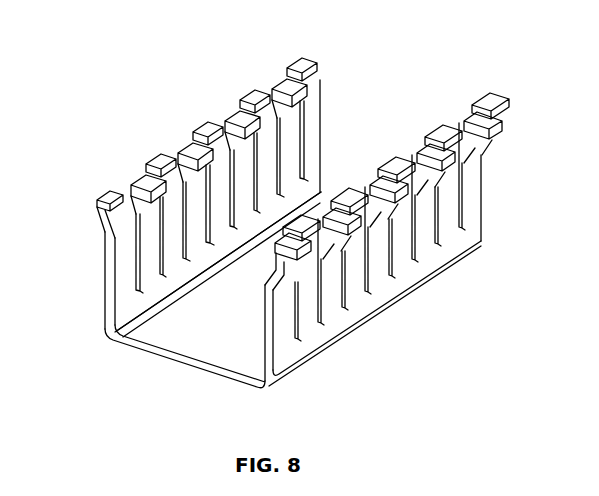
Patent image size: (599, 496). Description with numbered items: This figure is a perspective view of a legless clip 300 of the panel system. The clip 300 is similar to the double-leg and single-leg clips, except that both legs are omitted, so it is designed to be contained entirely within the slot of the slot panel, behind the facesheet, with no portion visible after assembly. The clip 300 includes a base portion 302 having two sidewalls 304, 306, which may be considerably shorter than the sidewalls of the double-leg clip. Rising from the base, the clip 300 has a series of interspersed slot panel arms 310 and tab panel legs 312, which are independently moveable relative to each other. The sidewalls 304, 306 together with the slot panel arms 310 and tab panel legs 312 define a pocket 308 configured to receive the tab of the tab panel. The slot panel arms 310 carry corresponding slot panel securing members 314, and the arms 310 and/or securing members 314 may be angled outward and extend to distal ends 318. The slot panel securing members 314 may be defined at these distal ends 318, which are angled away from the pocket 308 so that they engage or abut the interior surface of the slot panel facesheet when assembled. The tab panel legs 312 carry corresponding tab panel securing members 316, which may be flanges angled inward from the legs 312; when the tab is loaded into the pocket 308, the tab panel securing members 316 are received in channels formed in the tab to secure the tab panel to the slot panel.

The clip 300 is at (403, 44).
The base portion 302 is at (172, 375).
The sidewall 304 is at (125, 340).
The sidewall 306 is at (292, 352).
The pocket 308 is at (226, 342).
The slot panel arm 310 is at (124, 282).
The tab panel leg 312 is at (150, 248).
The slot panel securing member 314 is at (108, 196).
The tab panel securing member 316 is at (158, 182).
The distal end 318 is at (94, 212).